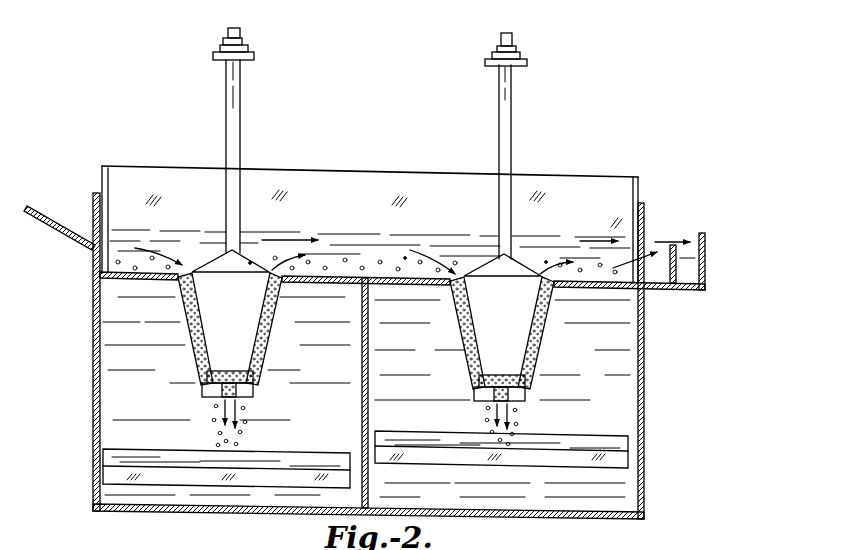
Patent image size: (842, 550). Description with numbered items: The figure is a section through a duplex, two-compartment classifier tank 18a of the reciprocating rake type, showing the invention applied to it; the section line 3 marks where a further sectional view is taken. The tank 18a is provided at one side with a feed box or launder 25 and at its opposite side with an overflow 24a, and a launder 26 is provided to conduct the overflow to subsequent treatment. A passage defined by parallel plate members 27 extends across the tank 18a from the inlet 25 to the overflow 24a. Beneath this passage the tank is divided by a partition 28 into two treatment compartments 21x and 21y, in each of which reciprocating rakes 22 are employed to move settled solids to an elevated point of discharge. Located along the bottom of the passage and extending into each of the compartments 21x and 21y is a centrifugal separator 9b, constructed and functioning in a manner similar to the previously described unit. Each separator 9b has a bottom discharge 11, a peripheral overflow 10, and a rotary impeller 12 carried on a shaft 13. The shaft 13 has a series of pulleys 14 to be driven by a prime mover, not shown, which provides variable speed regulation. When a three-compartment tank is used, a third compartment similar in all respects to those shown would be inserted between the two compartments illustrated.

The section line 3 is at (203, 16).
The centrifugal separator 9b is at (265, 350).
The peripheral overflow 10 is at (283, 284).
The bottom discharge 11 is at (238, 398).
The rotary impeller 12 is at (366, 287).
The shaft 13 is at (238, 122).
The pulleys 14 is at (253, 50).
The classifier tank 18a is at (644, 388).
The treatment compartment 21x is at (226, 396).
The treatment compartment 21y is at (502, 398).
The reciprocating rakes 22 is at (281, 458).
The overflow 24a is at (674, 242).
The feed box 25 is at (57, 226).
The launder 26 is at (687, 261).
The plate members 27 is at (370, 224).
The partition 28 is at (371, 376).